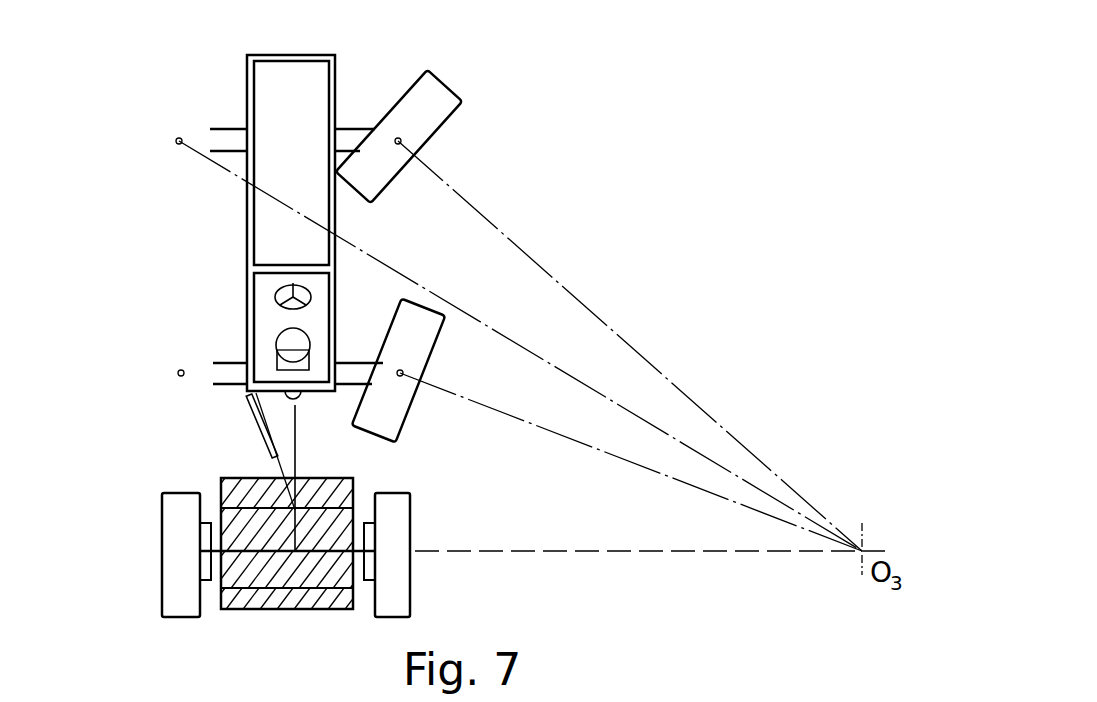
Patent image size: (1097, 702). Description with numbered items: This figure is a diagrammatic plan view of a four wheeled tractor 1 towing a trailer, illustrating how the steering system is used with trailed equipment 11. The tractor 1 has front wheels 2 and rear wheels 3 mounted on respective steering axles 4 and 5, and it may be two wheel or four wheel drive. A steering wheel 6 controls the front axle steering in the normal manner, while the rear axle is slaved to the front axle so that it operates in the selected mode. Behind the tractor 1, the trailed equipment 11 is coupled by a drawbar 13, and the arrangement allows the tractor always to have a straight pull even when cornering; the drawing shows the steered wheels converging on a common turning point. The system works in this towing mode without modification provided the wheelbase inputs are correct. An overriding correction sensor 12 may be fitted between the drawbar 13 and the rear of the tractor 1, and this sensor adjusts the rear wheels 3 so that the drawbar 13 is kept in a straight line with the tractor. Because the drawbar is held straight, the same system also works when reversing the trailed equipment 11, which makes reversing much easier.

The tractor 1 is at (262, 248).
The front wheels 2 is at (437, 123).
The rear wheels 3 is at (415, 352).
The steering axle 4 is at (357, 135).
The steering axle 5 is at (232, 372).
The steering wheel 6 is at (305, 298).
The trailed equipment 11 is at (148, 598).
The overriding correction sensor 12 is at (265, 443).
The drawbar 13 is at (297, 440).